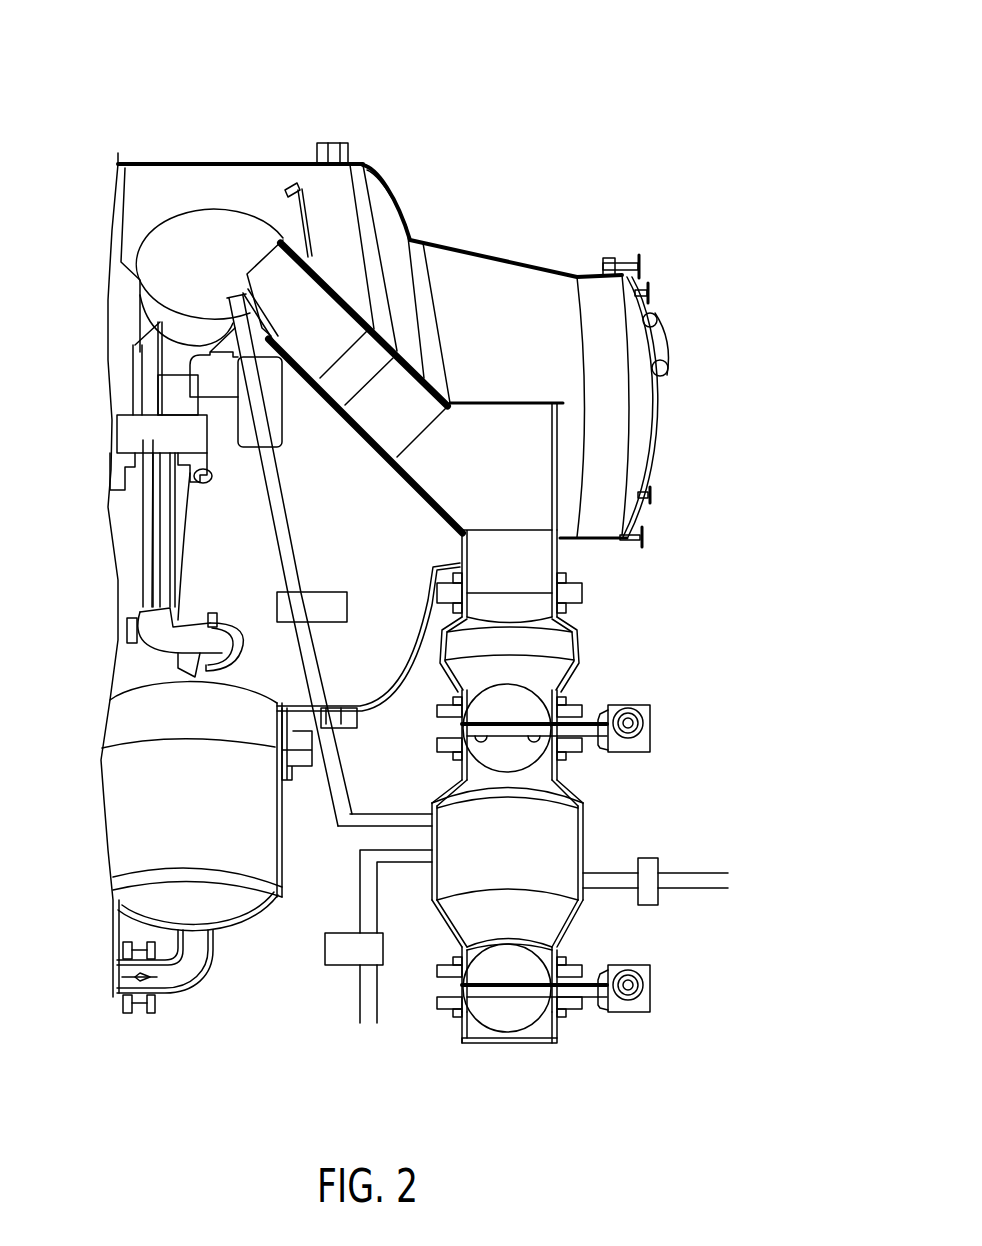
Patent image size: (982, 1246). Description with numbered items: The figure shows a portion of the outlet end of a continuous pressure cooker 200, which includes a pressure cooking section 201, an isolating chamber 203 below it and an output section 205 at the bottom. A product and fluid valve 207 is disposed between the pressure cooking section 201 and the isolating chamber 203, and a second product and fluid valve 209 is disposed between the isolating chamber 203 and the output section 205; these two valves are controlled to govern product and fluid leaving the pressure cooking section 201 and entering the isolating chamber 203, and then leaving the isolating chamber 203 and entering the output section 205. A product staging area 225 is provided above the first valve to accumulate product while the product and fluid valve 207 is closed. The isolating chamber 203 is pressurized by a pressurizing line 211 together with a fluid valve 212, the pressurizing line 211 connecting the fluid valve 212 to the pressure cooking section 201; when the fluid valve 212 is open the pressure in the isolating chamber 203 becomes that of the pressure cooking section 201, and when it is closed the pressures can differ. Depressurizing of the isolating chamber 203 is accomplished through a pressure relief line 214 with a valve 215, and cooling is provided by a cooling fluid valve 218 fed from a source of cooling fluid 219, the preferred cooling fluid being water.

The continuous pressure cooker 200 is at (460, 110).
The pressure cooking section 201 is at (497, 278).
The isolating chamber 203 is at (547, 857).
The output section 205 is at (547, 1037).
The product and fluid valve 207 is at (650, 717).
The product and fluid valve 209 is at (652, 980).
The pressurizing line 211 is at (282, 512).
The fluid valve 212 is at (338, 587).
The pressure relief line 214 is at (367, 895).
The valve 215 is at (323, 945).
The cooling fluid valve 218 is at (657, 900).
The source of cooling fluid 219 is at (700, 877).
The product staging area 225 is at (520, 543).